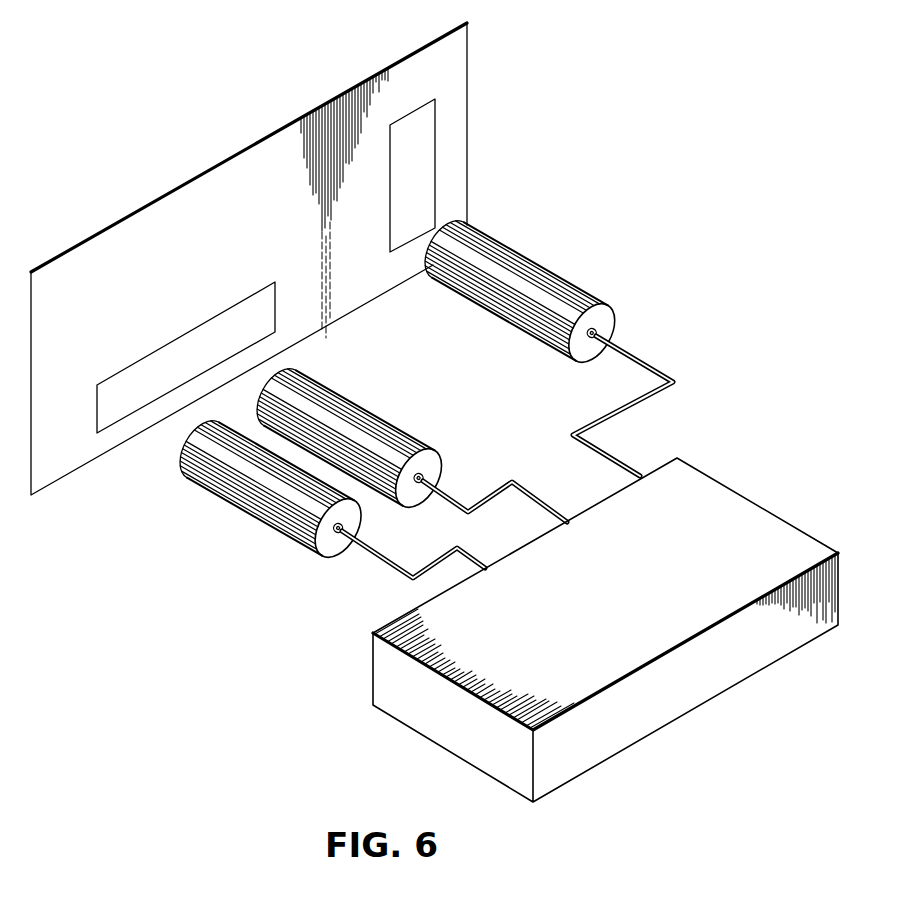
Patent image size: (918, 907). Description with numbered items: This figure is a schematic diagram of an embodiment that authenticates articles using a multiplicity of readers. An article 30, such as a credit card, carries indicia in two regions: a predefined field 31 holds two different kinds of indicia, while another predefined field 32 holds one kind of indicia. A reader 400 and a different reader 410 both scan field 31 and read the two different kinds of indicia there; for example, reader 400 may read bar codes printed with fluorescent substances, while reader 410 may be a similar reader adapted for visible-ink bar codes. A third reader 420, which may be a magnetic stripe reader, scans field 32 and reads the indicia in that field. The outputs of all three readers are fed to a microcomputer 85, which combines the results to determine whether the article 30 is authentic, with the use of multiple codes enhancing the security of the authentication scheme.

The article 30 is at (197, 179).
The predefined field 31 is at (189, 378).
The predefined field 32 is at (429, 188).
The reader 400 is at (218, 497).
The reader 410 is at (327, 388).
The third reader 420 is at (507, 246).
The microcomputer 85 is at (644, 620).